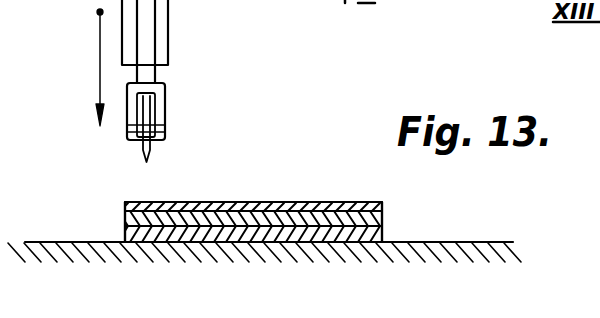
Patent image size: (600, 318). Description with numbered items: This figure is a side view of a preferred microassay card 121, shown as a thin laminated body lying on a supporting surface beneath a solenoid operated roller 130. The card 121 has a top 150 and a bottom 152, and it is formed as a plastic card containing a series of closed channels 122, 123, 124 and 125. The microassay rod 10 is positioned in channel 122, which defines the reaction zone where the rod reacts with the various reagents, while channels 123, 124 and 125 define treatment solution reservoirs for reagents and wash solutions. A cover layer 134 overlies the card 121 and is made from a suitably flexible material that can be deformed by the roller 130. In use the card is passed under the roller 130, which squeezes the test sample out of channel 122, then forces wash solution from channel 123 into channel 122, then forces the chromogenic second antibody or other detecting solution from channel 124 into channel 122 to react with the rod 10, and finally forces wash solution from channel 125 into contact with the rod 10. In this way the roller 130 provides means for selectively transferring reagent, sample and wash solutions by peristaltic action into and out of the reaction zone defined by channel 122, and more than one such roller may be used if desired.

The solenoid operated roller 130 is at (163, 97).
The microassay rod 10 is at (292, 202).
The top 150 is at (357, 202).
The channel 124 is at (174, 203).
The card 121 is at (383, 215).
The channel 122 is at (249, 218).
The channel 123 is at (206, 202).
The channel 125 is at (126, 225).
The cover layer 134 is at (383, 202).
The bottom 152 is at (293, 242).